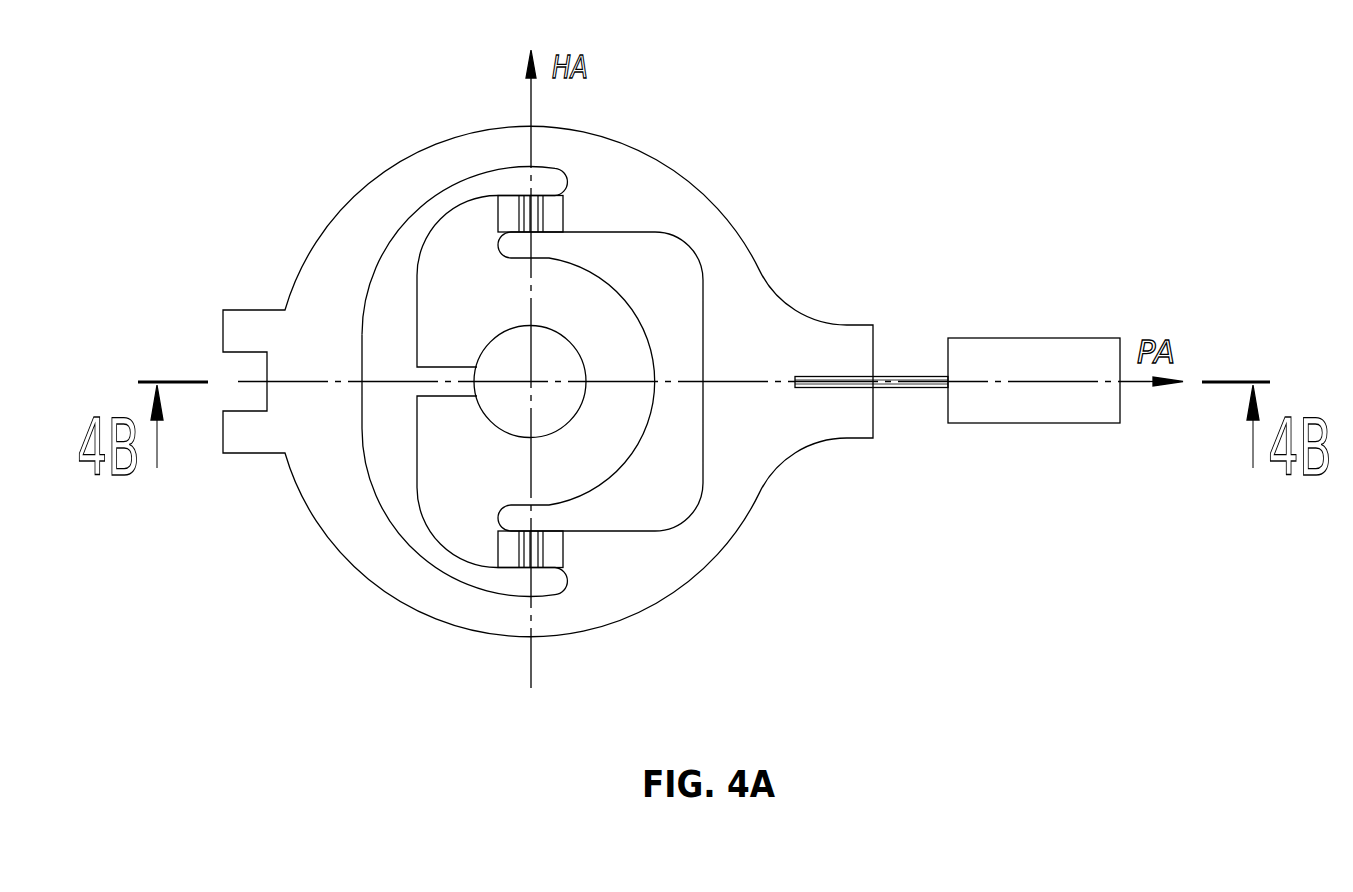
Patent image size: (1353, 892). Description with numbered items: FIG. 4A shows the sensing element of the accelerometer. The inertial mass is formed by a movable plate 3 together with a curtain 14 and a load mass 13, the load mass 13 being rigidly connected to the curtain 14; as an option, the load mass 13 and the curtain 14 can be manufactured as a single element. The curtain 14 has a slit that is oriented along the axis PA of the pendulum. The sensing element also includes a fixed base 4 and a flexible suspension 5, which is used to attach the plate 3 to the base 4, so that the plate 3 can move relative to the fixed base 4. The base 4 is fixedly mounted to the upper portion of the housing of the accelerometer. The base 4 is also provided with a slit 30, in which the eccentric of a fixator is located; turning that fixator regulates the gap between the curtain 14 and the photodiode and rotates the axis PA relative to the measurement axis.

The movable plate 3 is at (440, 595).
The slit 30 is at (448, 382).
The fixed base 4 is at (592, 448).
The flexible suspension 5 is at (553, 552).
The load mass 13 is at (1022, 360).
The curtain 14 is at (902, 388).